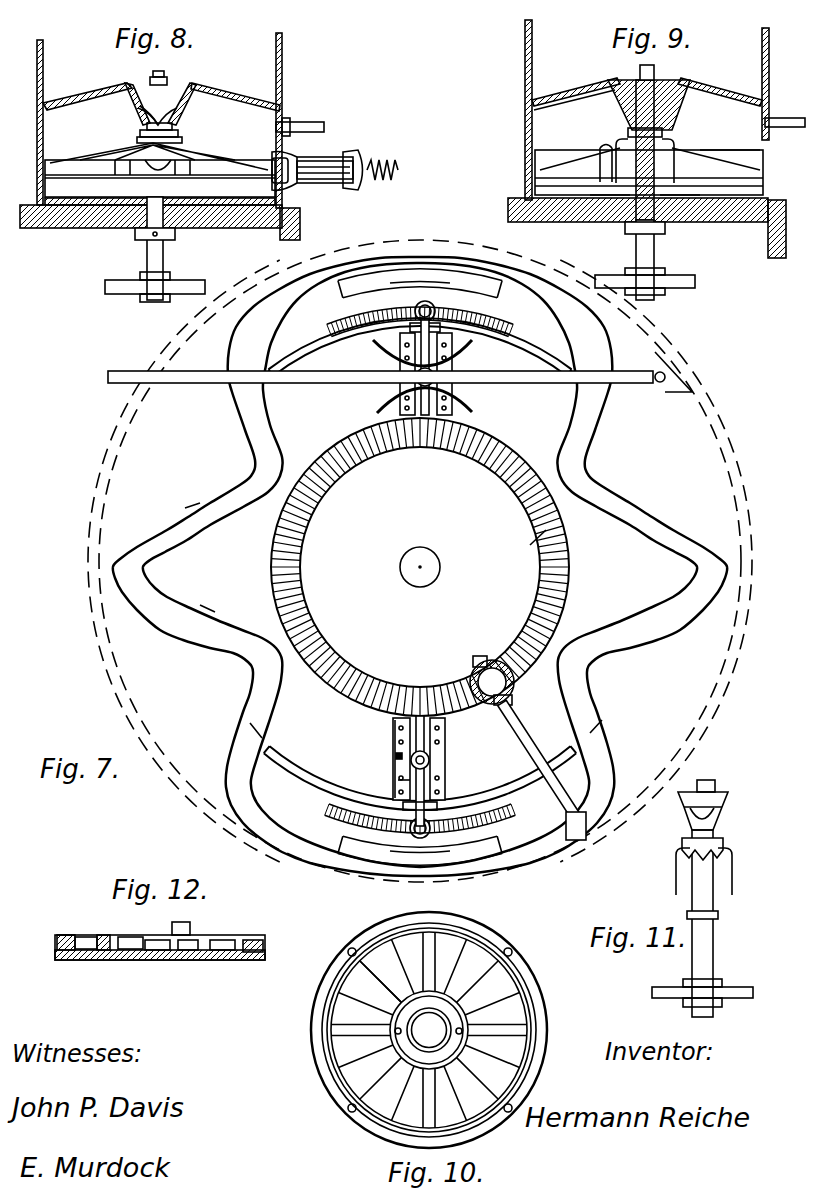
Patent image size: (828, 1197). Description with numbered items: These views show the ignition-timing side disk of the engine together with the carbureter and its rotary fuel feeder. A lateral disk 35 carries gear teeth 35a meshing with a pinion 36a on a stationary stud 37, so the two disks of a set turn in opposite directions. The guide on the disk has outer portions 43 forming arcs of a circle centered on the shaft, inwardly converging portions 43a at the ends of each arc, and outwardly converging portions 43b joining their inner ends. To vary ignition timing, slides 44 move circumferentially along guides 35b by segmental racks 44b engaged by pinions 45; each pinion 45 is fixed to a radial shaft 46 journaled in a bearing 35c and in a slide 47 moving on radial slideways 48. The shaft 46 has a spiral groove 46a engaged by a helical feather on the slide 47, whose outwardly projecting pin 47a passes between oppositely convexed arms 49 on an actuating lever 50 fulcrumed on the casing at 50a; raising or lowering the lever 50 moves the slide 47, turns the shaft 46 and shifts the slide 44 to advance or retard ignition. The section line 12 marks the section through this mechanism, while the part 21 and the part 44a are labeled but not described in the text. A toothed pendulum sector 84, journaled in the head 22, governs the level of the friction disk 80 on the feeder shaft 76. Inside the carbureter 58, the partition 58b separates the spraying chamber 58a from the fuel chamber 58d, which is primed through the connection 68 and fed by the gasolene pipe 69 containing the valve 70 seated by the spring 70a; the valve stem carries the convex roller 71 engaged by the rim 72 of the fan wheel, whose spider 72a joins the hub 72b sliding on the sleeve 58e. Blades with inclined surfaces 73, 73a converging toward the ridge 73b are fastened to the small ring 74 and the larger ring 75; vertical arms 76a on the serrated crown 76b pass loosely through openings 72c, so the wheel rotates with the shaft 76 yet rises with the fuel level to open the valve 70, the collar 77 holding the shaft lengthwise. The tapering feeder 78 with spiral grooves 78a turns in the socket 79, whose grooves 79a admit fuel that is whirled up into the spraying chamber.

In FIG. 7, the section line 12 is at (410, 904).
In FIG. 8, the base plate 21 is at (50, 228).
In FIG. 9, the base plate 21 is at (511, 210).
In FIG. 8, the head 22 is at (281, 226).
In FIG. 9, the head 22 is at (781, 258).
In FIG. 7, the lateral disk 35 is at (444, 567).
In FIG. 12, the lateral disk 35 is at (165, 960).
In FIG. 7, the gear teeth 35a is at (532, 545).
In FIG. 12, the gear teeth 35a is at (262, 942).
In FIG. 7, the guide 35b is at (305, 787).
In FIG. 12, the guide 35b is at (125, 958).
In FIG. 7, the bearing 35c is at (403, 806).
In FIG. 7, the pinion 36a is at (512, 688).
In FIG. 7, the stationary stud 37 is at (540, 742).
In FIG. 7, the outer portion of guide 43 is at (318, 852).
In FIG. 7, the inwardly converging portion 43a is at (592, 733).
In FIG. 7, the outwardly converging portion 43b is at (206, 612).
In FIG. 7, the slide 44 is at (495, 855).
In FIG. 12, the slide 44 is at (73, 960).
In FIG. 7, the segment edge 44a is at (474, 862).
In FIG. 12, the segment edge 44a is at (70, 934).
In FIG. 7, the segmental rack 44b is at (479, 815).
In FIG. 7, the pinion 45 is at (422, 837).
In FIG. 12, the pinion 45 is at (122, 935).
In FIG. 7, the radial shaft 46 is at (446, 738).
In FIG. 12, the radial shaft 46 is at (226, 938).
In FIG. 7, the spiral groove 46a is at (398, 780).
In FIG. 7, the slide 47 is at (430, 760).
In FIG. 12, the slide 47 is at (190, 960).
In FIG. 7, the pin 47a is at (398, 756).
In FIG. 12, the pin 47a is at (190, 926).
In FIG. 7, the radial slideway 48 is at (393, 727).
In FIG. 7, the oppositely convexed arm 49 is at (380, 411).
In FIG. 7, the actuating lever 50 is at (526, 383).
In FIG. 7, the fulcrum 50a is at (660, 384).
In FIG. 8, the carbureter 58 is at (282, 56).
In FIG. 9, the carbureter 58 is at (769, 56).
In FIG. 8, the spraying chamber 58a is at (98, 90).
In FIG. 9, the spraying chamber 58a is at (576, 83).
In FIG. 8, the partition 58b is at (238, 90).
In FIG. 9, the partition 58b is at (712, 88).
In FIG. 9, the fuel chamber 58d is at (574, 102).
In FIG. 8, the sleeve 58e is at (150, 178).
In FIG. 9, the sleeve 58e is at (702, 151).
In FIG. 8, the priming connection 68 is at (301, 122).
In FIG. 9, the priming connection 68 is at (781, 118).
In FIG. 8, the gasolene pipe 69 is at (361, 158).
In FIG. 8, the valve 70 is at (346, 184).
In FIG. 8, the spring 70a is at (372, 163).
In FIG. 8, the convex roller 71 is at (276, 160).
In FIG. 8, the rim 72 is at (160, 178).
In FIG. 9, the rim 72 is at (763, 178).
In FIG. 10, the rim 72 is at (540, 996).
In FIG. 9, the spider 72a is at (604, 200).
In FIG. 10, the spider 72a is at (497, 1032).
In FIG. 9, the hub 72b is at (667, 200).
In FIG. 10, the hub 72b is at (410, 1046).
In FIG. 10, the opening 72c is at (472, 1050).
In FIG. 8, the inclined surface 73 is at (226, 162).
In FIG. 9, the inclined surface 73 is at (592, 152).
In FIG. 10, the inclined surface 73 is at (429, 1030).
In FIG. 10, the inclined surface 73a is at (380, 972).
In FIG. 10, the central ridge 73b is at (352, 956).
In FIG. 8, the small ring 74 is at (182, 141).
In FIG. 9, the small ring 74 is at (623, 139).
In FIG. 10, the small ring 74 is at (462, 1006).
In FIG. 8, the larger ring 75 is at (92, 160).
In FIG. 10, the larger ring 75 is at (540, 1010).
In FIG. 8, the feeder shaft 76 is at (147, 236).
In FIG. 9, the feeder shaft 76 is at (636, 250).
In FIG. 11, the feeder shaft 76 is at (713, 956).
In FIG. 9, the vertical arm 76a is at (680, 166).
In FIG. 11, the vertical arm 76a is at (735, 878).
In FIG. 9, the crown 76b is at (673, 136).
In FIG. 11, the crown 76b is at (723, 848).
In FIG. 8, the collar 77 is at (172, 239).
In FIG. 9, the collar 77 is at (660, 235).
In FIG. 11, the collar 77 is at (718, 915).
In FIG. 8, the feeder 78 is at (170, 98).
In FIG. 9, the feeder 78 is at (657, 95).
In FIG. 11, the feeder 78 is at (722, 800).
In FIG. 8, the spiral groove 78a is at (146, 102).
In FIG. 11, the spiral groove 78a is at (690, 816).
In FIG. 8, the socket 79 is at (188, 106).
In FIG. 9, the socket 79 is at (613, 96).
In FIG. 8, the groove 79a is at (143, 119).
In FIG. 8, the friction disk 80 is at (200, 284).
In FIG. 9, the friction disk 80 is at (695, 282).
In FIG. 11, the friction disk 80 is at (730, 990).
In FIG. 7, the toothed sector 84 is at (380, 341).